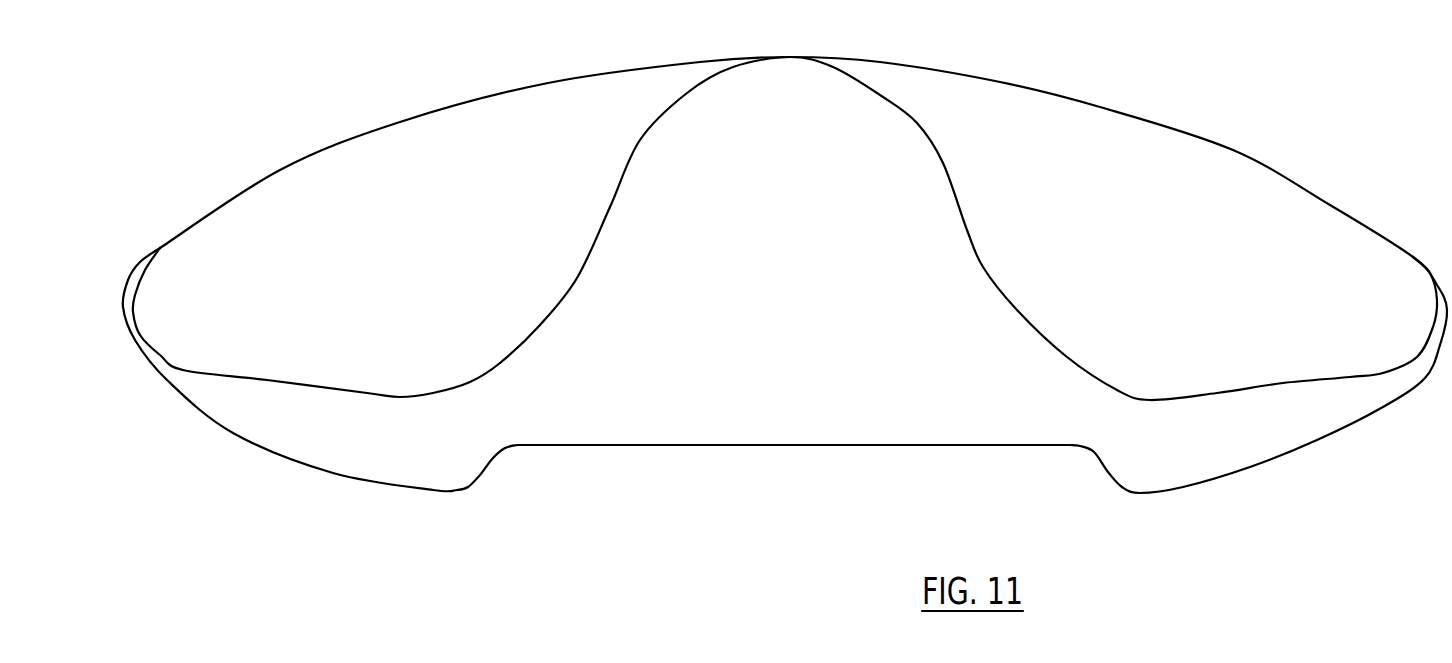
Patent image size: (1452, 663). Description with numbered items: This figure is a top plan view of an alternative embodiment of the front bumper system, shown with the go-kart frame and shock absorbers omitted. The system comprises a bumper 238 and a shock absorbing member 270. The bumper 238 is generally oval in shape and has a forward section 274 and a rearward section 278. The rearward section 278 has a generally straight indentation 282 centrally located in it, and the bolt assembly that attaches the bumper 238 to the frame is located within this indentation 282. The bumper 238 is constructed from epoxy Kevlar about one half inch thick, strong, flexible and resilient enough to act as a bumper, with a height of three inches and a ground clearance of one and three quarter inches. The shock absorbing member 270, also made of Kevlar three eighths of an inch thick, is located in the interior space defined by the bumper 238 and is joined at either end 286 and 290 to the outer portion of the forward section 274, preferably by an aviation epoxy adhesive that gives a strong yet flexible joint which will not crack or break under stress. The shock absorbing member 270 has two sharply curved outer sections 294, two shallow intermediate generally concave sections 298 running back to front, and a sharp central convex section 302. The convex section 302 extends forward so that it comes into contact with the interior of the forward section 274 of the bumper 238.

The bumper 238 is at (1258, 146).
The forward section 274 is at (1003, 77).
The end 290 is at (1413, 262).
The rearward section 278 is at (1198, 483).
The indentation 282 is at (787, 447).
The end 286 is at (160, 250).
The sharply curved outer section 294 is at (140, 330).
The shallow intermediate generally concave section 298 is at (300, 383).
The sharp central convex section 302 is at (917, 125).
The shock absorbing member 270 is at (983, 268).